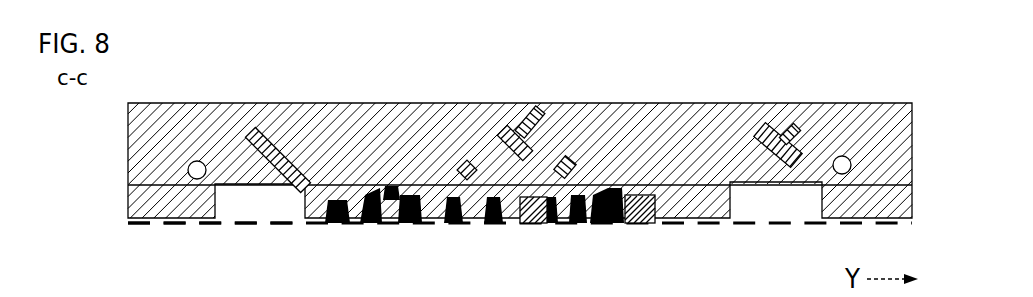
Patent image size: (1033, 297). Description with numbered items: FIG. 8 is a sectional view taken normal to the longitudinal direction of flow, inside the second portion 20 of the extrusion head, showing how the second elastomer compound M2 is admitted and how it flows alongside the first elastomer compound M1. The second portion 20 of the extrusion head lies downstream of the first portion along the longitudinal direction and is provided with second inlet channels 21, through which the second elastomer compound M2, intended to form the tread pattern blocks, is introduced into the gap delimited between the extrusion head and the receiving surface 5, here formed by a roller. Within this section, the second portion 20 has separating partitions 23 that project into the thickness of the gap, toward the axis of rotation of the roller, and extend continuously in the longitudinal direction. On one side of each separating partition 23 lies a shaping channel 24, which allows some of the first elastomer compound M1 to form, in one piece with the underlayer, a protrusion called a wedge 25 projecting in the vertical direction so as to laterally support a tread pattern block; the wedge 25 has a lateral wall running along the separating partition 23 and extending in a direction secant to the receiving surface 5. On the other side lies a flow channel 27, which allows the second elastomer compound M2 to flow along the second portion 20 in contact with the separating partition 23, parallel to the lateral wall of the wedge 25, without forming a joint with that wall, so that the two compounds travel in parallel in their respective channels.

The second inlet channels 21 is at (303, 194).
The second portion of the extrusion head 20 is at (258, 239).
The receiving surface 5 is at (148, 226).
The first elastomer compound M1 is at (365, 180).
The second elastomer compound M2 is at (300, 168).
The wedge 25 is at (640, 209).
The flow channel 27 is at (333, 223).
The separating partition 23 is at (370, 223).
The shaping channel 24 is at (383, 223).